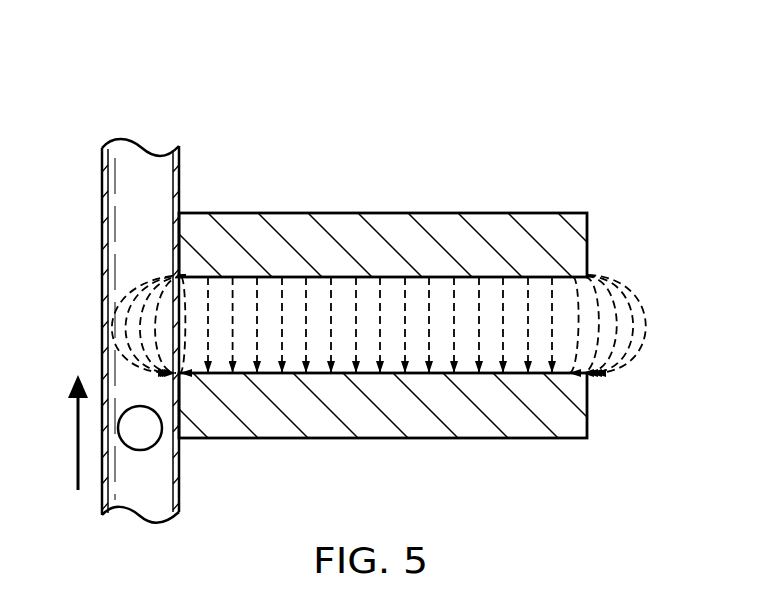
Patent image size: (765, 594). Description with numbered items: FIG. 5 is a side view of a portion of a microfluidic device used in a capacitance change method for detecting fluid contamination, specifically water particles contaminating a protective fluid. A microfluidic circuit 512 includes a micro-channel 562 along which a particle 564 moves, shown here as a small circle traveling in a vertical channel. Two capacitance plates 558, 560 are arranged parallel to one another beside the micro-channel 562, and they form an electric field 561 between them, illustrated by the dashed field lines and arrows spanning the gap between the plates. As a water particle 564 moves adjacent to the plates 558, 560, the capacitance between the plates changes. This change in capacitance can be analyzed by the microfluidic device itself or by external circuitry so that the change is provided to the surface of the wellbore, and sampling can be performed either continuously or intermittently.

The microfluidic circuit 512 is at (372, 307).
The capacitance plate 558 is at (391, 222).
The capacitance plate 560 is at (405, 426).
The electric field 561 is at (646, 327).
The micro-channel 562 is at (101, 236).
The particle 564 is at (140, 451).